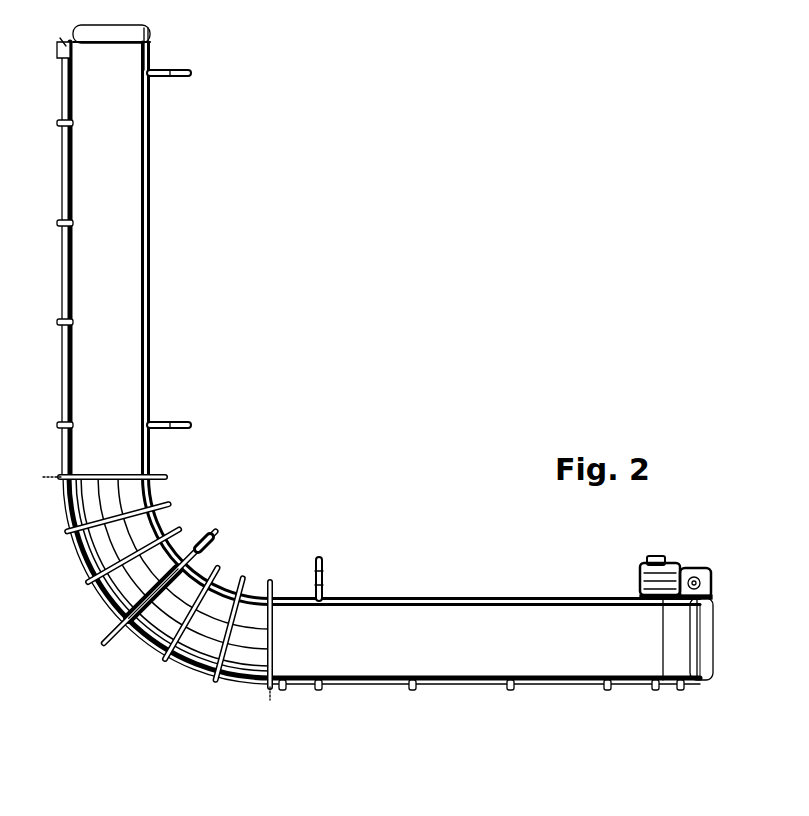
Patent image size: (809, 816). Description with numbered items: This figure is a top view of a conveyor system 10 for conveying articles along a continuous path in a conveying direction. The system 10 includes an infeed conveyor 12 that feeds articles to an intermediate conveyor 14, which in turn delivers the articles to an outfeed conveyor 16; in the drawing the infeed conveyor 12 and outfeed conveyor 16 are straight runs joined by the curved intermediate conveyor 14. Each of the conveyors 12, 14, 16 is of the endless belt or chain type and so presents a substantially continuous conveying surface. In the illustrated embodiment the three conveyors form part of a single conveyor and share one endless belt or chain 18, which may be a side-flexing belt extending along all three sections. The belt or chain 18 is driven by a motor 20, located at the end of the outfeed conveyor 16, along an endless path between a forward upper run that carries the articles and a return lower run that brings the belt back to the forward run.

The conveyor system 10 is at (357, 398).
The infeed conveyor 12 is at (162, 252).
The intermediate conveyor 14 is at (205, 510).
The outfeed conveyor 16 is at (663, 695).
The endless belt or chain 18 is at (114, 297).
The motor 20 is at (712, 582).